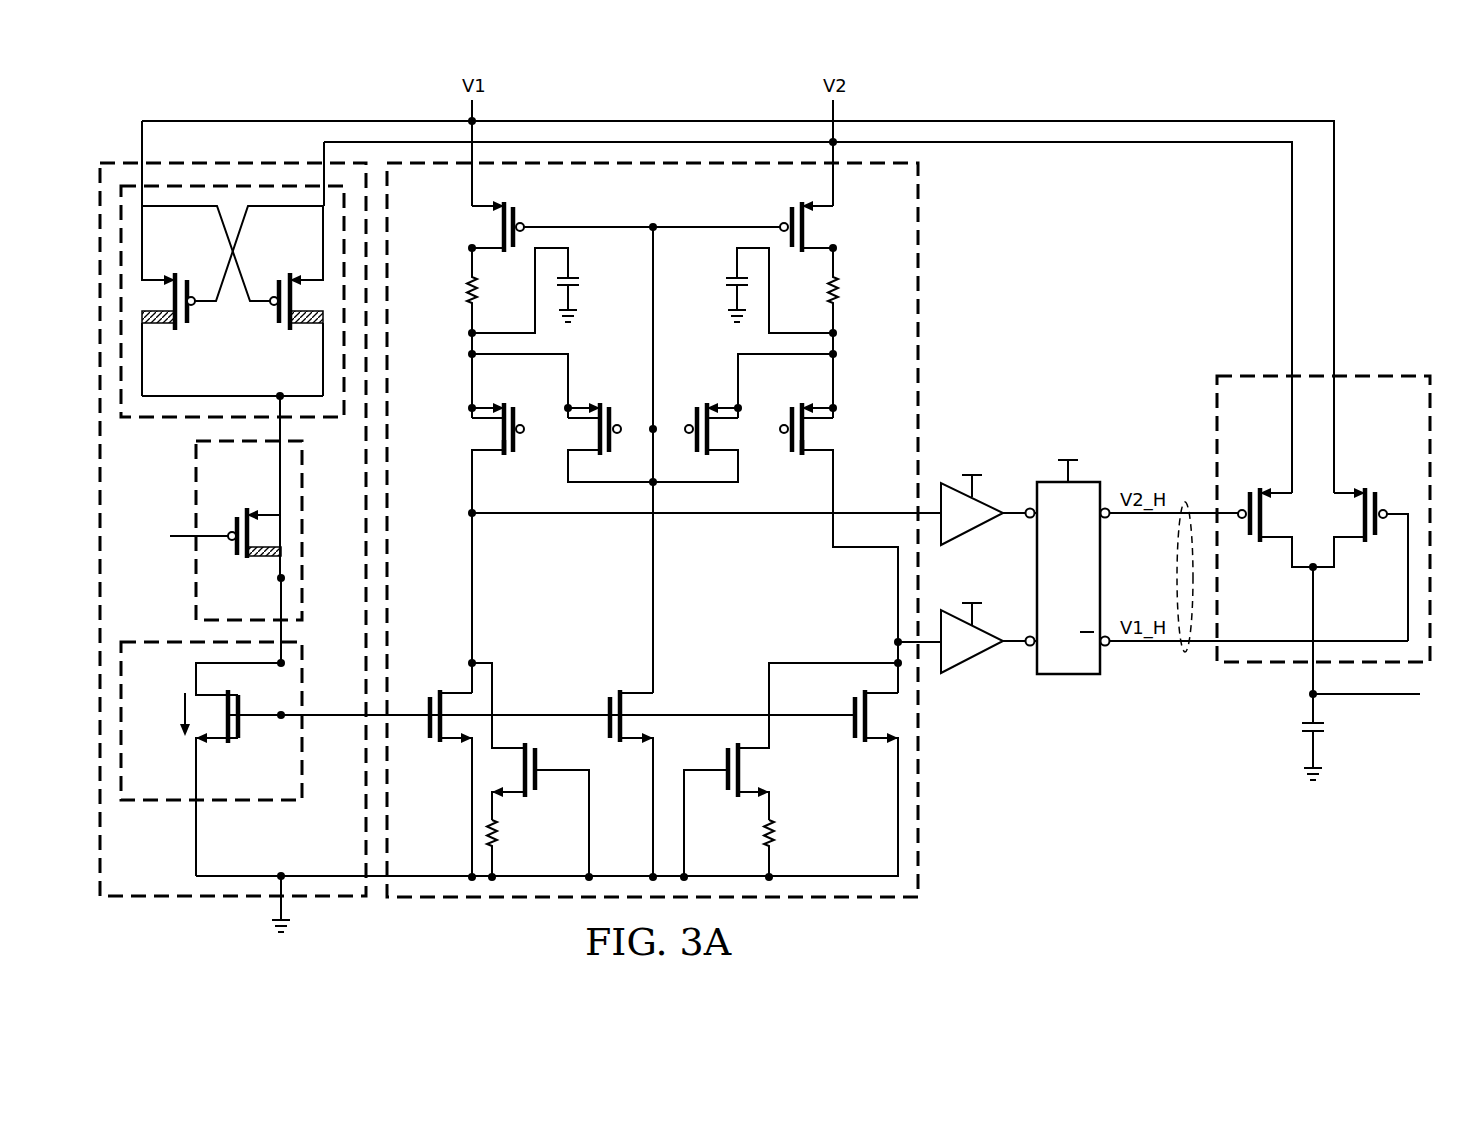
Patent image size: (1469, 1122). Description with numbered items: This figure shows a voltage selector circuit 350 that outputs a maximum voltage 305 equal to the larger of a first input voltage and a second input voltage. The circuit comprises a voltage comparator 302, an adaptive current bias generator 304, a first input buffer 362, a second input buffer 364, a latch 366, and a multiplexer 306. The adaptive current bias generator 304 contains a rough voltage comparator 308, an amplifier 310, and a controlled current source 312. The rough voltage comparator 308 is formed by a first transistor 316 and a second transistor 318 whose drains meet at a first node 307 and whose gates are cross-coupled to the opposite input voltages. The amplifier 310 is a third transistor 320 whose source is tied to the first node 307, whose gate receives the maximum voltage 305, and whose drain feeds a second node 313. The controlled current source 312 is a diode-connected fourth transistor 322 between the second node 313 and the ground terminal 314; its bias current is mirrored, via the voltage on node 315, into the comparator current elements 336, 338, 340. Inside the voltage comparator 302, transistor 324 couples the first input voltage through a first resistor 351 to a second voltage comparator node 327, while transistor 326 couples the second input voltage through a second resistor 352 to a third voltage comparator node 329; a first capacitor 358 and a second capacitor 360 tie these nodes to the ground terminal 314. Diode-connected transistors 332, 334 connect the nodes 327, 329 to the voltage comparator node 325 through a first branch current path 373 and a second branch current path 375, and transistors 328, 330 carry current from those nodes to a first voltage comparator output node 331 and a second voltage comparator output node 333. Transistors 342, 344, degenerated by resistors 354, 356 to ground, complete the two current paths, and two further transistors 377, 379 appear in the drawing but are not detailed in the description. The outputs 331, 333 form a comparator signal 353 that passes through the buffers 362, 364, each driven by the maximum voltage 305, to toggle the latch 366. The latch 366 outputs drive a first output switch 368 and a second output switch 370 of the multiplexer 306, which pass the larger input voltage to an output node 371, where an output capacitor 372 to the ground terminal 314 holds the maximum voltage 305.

The voltage comparator 302 is at (926, 327).
The adaptive current bias generator 304 is at (156, 903).
The maximum voltage 305 is at (1392, 699).
The multiplexer 306 is at (1378, 370).
The first node 307 is at (278, 392).
The rough voltage comparator 308 is at (181, 424).
The amplifier 310 is at (190, 572).
The controlled current source 312 is at (171, 808).
The second node 313 is at (277, 581).
The ground terminal 314 is at (275, 922).
The node 315 is at (343, 719).
The first transistor 316 is at (189, 283).
The second transistor 318 is at (275, 283).
The third transistor 320 is at (233, 514).
The fourth transistor 322 is at (243, 746).
The first transistor 324 is at (523, 219).
The voltage comparator node 325 is at (650, 230).
The second transistor 326 is at (786, 219).
The second voltage comparator node 327 is at (468, 358).
The third transistor 328 is at (523, 446).
The third voltage comparator node 329 is at (838, 358).
The fourth transistor 330 is at (783, 446).
The first voltage comparator output node 331 is at (477, 519).
The fifth transistor 332 is at (618, 410).
The second voltage comparator output node 333 is at (895, 640).
The sixth transistor 334 is at (688, 410).
The first voltage comparator current element 336 is at (427, 731).
The second voltage comparator current element 338 is at (608, 707).
The third voltage comparator current element 340 is at (852, 707).
The transistor 342 is at (538, 759).
The transistor 344 is at (725, 759).
The voltage selector circuit 350 is at (1410, 120).
The first resistor 351 is at (467, 290).
The second resistor 352 is at (838, 290).
The comparator signal 353 is at (1185, 653).
The resistor 354 is at (497, 835).
The resistor 356 is at (775, 835).
The first capacitor 358 is at (580, 283).
The second capacitor 360 is at (726, 282).
The first input buffer 362 is at (983, 656).
The second input buffer 364 is at (983, 528).
The latch 366 is at (1080, 677).
The first output switch 368 is at (1240, 500).
The second output switch 370 is at (1385, 500).
The output node 371 is at (1318, 571).
The output capacitor 372 is at (1300, 729).
The first branch current path 373 is at (470, 200).
The second branch current path 375 is at (836, 196).
The transistor 377 is at (567, 393).
The transistor 379 is at (741, 393).